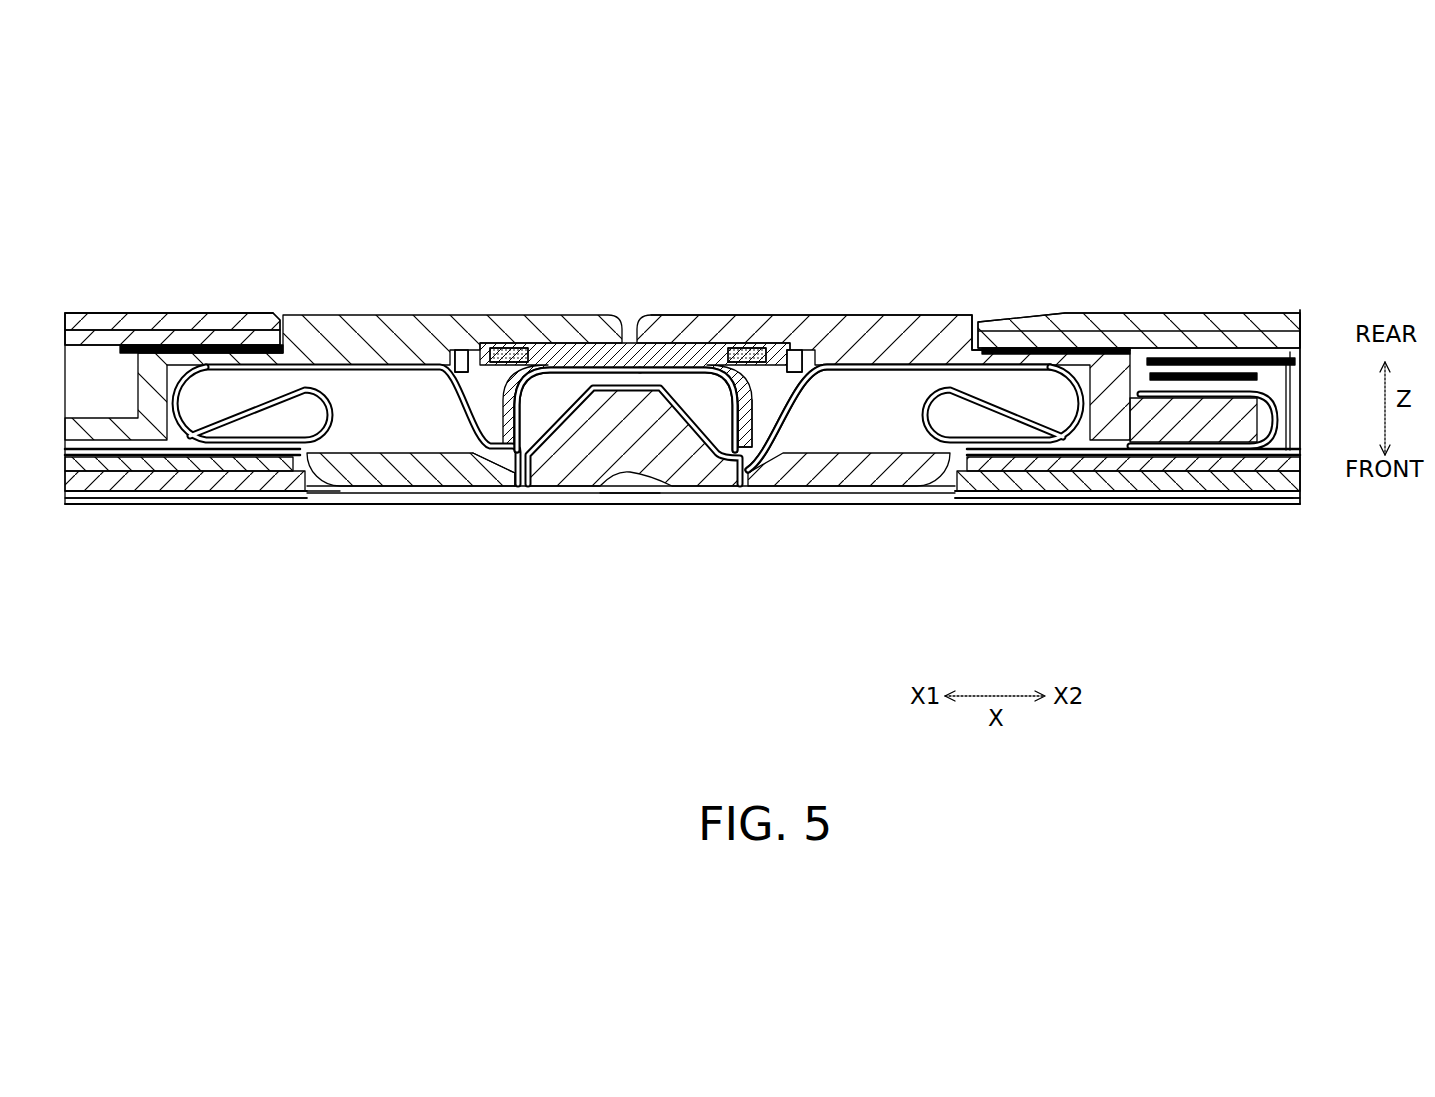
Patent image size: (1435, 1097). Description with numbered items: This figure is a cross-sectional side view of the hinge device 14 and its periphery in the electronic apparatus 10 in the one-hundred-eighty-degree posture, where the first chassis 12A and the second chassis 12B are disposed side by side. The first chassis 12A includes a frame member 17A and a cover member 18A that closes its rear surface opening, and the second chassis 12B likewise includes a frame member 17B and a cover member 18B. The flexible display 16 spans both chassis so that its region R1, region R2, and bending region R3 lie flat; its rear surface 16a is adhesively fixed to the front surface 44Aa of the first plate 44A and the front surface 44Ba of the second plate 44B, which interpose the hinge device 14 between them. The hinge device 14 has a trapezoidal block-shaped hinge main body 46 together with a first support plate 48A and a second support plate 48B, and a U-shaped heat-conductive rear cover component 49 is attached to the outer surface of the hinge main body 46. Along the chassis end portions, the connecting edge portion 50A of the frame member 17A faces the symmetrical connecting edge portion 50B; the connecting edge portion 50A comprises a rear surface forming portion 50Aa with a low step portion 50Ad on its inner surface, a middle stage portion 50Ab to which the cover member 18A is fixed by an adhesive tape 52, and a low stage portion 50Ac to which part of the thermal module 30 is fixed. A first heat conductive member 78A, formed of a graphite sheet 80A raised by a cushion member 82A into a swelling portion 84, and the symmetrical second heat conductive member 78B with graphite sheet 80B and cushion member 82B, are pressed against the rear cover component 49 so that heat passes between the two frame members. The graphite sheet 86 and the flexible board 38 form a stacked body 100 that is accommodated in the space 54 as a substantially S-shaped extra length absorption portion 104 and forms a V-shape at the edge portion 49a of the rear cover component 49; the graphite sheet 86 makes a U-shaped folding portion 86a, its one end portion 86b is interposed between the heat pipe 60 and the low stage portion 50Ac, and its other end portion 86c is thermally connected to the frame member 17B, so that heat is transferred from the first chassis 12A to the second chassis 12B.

The electronic apparatus 10 is at (108, 185).
The first chassis 12A is at (1110, 298).
The second chassis 12B is at (204, 257).
The hinge device 14 is at (656, 532).
The display 16 is at (420, 515).
The rear surface of display 16a is at (478, 494).
The frame member 17A is at (790, 264).
The frame member 17B is at (480, 270).
The cover member 18A is at (1240, 305).
The cover member 18B is at (120, 298).
The thermal module 30 is at (1318, 352).
The flexible board 38 is at (1287, 502).
The first plate 44A is at (1173, 502).
The front surface of first plate 44Aa is at (1105, 502).
The second plate 44B is at (180, 502).
The front surface of second plate 44Ba is at (252, 492).
The hinge main body 46 is at (597, 486).
The first support plate 48A is at (862, 472).
The second support plate 48B is at (402, 478).
The rear cover component 49 is at (655, 342).
The edge portion of rear cover component 49a is at (745, 455).
The connecting edge portion 50A is at (835, 318).
The rear surface forming portion 50Aa is at (890, 278).
The middle stage portion 50Ab is at (1018, 344).
The low stage portion 50Ac is at (1165, 396).
The low step portion 50Ad is at (797, 462).
The connecting edge portion 50B is at (322, 328).
The adhesive tape 52 is at (215, 345).
The space 54 is at (340, 432).
The heat pipe 60 is at (1220, 371).
The first heat conductive member 78A is at (712, 470).
The second heat conductive member 78B is at (538, 462).
The graphite sheet 80A is at (905, 345).
The graphite sheet 80B is at (458, 348).
The cushion member 82A is at (750, 346).
The cushion member 82B is at (528, 346).
The swelling portion 84 is at (621, 489).
The graphite sheet 86 is at (1248, 502).
The U-shaped folding portion 86a is at (1288, 430).
The one end portion 86b is at (1190, 356).
The other end portion 86c is at (103, 500).
The stacked body 100 is at (1312, 575).
The extra length absorption portion 104 is at (352, 402).
The region R1 is at (1128, 522).
The region R2 is at (305, 522).
The bending region R3 is at (630, 548).